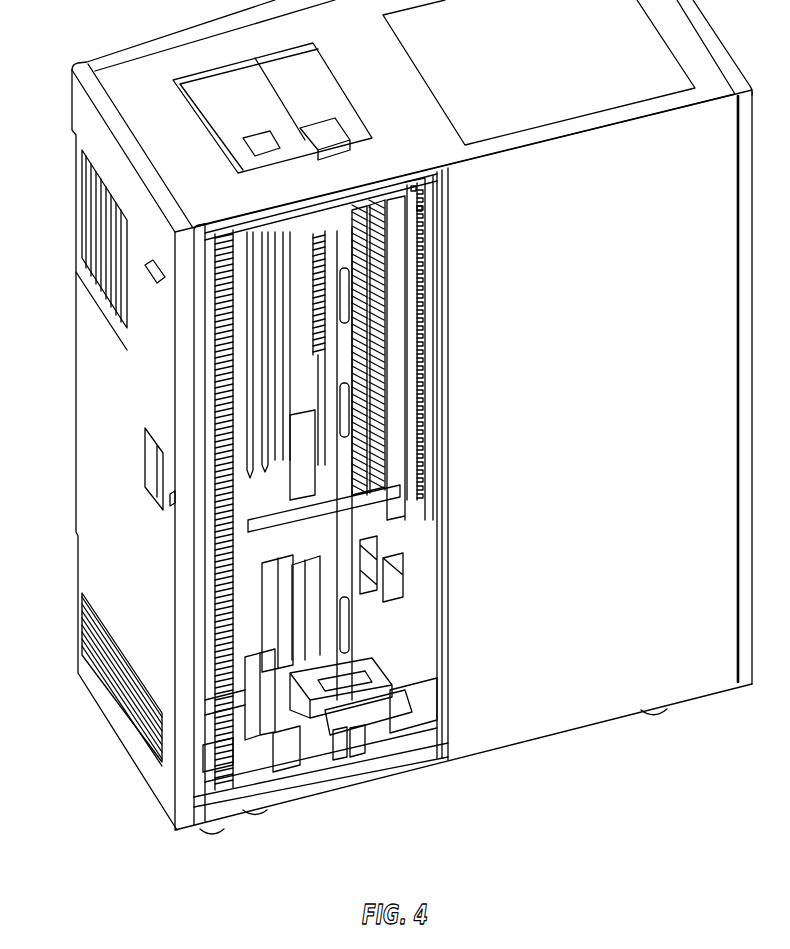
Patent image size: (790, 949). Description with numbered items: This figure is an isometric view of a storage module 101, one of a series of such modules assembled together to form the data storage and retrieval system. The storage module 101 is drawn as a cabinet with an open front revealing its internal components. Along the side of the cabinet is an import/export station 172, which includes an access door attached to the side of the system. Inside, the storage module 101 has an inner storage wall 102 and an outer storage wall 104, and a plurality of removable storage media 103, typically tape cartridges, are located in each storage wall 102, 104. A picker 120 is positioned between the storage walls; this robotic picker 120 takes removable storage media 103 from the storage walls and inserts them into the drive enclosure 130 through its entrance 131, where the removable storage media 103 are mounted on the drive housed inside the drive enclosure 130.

The storage module 101 is at (150, 60).
The import/export station 172 is at (112, 228).
The inner storage wall 102 is at (396, 313).
The removable storage media 103 is at (380, 393).
The picker 120 is at (303, 522).
The entrance 131 is at (366, 553).
The drive enclosure 130 is at (399, 582).
The outer storage wall 104 is at (227, 693).